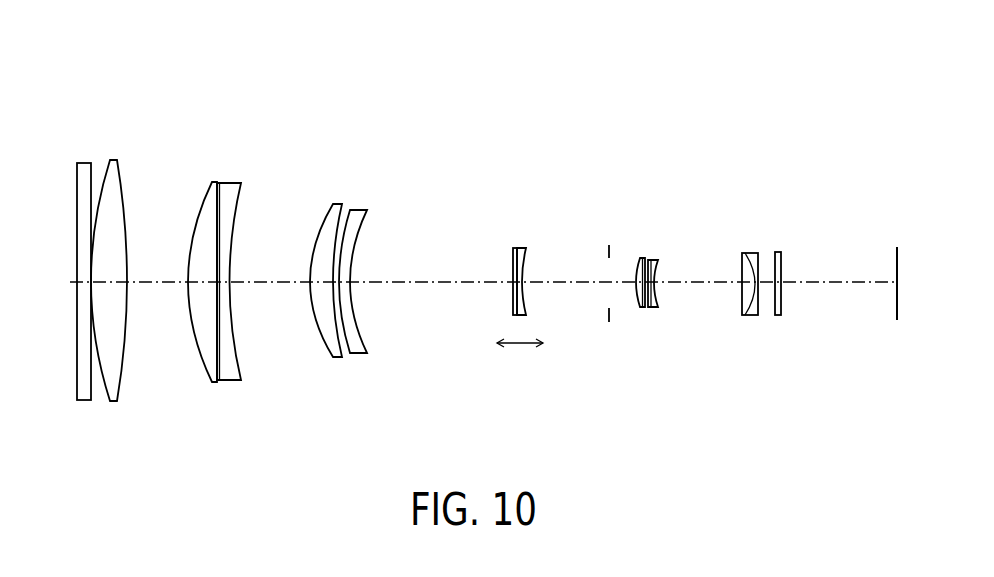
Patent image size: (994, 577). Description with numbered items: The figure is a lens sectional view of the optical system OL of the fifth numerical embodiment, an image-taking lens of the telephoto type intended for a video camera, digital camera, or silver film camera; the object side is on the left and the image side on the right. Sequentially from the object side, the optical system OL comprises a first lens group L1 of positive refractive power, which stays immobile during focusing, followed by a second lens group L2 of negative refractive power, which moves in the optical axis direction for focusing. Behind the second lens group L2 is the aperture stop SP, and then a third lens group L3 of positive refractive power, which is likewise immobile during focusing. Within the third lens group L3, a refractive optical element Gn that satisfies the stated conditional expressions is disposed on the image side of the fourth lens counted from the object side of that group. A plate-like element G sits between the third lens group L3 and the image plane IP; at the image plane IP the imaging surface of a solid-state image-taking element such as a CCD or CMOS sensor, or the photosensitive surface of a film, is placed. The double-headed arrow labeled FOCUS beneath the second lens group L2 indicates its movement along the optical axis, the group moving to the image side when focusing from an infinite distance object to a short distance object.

The optical system OL is at (53, 93).
The first lens group L1 is at (392, 135).
The second lens group L2 is at (537, 238).
The third lens group L3 is at (767, 250).
The aperture stop SP is at (609, 252).
The refractive optical element Gn is at (752, 252).
The glass block / filter G is at (781, 255).
The image plane IP is at (896, 260).
The focusing movement direction FOCUS is at (525, 360).